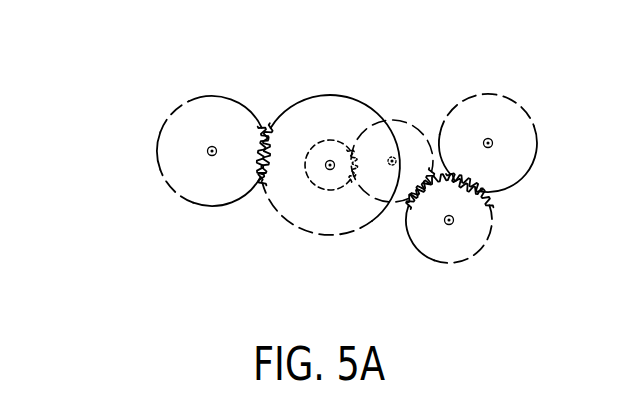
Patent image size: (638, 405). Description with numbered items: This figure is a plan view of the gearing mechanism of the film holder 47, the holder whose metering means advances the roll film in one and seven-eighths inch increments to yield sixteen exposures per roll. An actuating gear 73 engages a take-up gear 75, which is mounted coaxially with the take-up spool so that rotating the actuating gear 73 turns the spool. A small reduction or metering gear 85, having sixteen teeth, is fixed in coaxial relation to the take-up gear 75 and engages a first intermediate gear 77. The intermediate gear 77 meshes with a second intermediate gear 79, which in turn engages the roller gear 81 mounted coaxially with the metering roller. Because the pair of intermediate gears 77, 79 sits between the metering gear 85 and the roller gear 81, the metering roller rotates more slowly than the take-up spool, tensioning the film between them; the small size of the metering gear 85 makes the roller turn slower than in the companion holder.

The film holder 47 is at (119, 100).
The actuating gear 73 is at (196, 98).
The take-up gear 75 is at (297, 100).
The intermediate gear 77 is at (406, 117).
The intermediate gear 79 is at (441, 256).
The roller gear 81 is at (488, 94).
The metering gear 85 is at (325, 192).